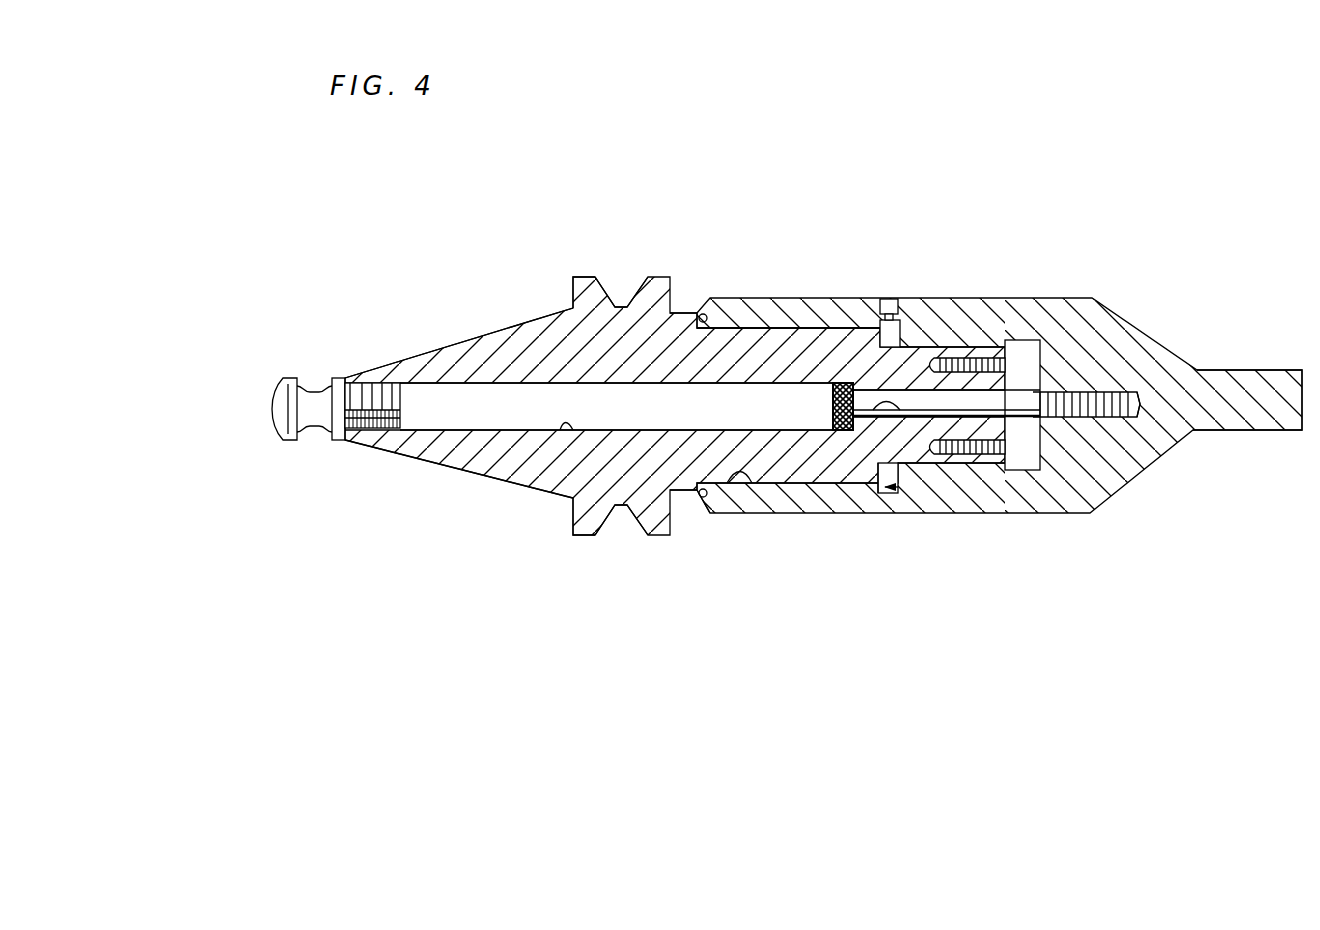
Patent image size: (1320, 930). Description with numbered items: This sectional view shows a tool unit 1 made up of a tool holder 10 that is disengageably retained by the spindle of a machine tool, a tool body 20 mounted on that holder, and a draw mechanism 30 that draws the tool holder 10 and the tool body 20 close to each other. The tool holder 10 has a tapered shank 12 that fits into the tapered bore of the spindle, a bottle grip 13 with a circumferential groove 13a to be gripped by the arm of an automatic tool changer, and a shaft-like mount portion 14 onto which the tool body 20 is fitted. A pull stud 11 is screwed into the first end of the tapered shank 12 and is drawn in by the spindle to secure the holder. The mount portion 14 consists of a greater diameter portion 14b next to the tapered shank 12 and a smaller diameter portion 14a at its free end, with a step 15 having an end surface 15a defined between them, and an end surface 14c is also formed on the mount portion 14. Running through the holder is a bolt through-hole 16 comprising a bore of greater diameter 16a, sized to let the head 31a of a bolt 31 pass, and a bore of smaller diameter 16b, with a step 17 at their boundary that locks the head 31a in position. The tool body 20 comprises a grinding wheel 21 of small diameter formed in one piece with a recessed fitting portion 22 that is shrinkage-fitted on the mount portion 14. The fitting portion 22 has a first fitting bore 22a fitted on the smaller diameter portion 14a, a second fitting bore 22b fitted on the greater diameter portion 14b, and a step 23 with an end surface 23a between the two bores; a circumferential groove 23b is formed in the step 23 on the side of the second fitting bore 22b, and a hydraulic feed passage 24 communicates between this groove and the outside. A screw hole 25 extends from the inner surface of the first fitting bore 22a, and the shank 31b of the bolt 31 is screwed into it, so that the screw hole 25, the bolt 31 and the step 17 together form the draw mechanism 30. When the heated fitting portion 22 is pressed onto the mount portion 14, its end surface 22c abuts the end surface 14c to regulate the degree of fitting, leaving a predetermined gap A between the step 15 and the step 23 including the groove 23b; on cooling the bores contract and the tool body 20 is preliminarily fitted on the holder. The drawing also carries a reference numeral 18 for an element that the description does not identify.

The tool unit 1 is at (1055, 180).
The tool holder 10 is at (378, 362).
The pull stud 11 is at (283, 396).
The tapered shank 12 is at (447, 368).
The bottle grip 13 is at (582, 286).
The circumferential groove 13a is at (627, 306).
The mount portion 14 is at (758, 357).
The smaller diameter portion 14a is at (935, 323).
The greater diameter portion 14b is at (808, 340).
The end surface 14c is at (703, 310).
The step 15 is at (847, 434).
The end surface 15a is at (902, 343).
The bolt through-hole 16 is at (482, 410).
The bore of greater diameter 16a is at (566, 428).
The bore of smaller diameter 16b is at (858, 433).
The step 17 is at (862, 372).
The spring 18 is at (975, 350).
The tool body 20 is at (1078, 297).
The grinding wheel 21 is at (1252, 395).
The fitting portion 22 is at (725, 307).
The first fitting bore 22a is at (912, 465).
The second fitting bore 22b is at (730, 470).
The end surface 22c is at (680, 495).
The step 23 is at (900, 333).
The end surface 23a is at (877, 493).
The circumferential groove 23b is at (888, 493).
The hydraulic feed passage 24 is at (873, 297).
The screw hole 25 is at (1127, 420).
The draw mechanism 30 is at (1022, 473).
The bolt 31 is at (1068, 425).
The head 31a is at (833, 407).
The shank 31b is at (1085, 390).
The predetermined gap A is at (900, 490).